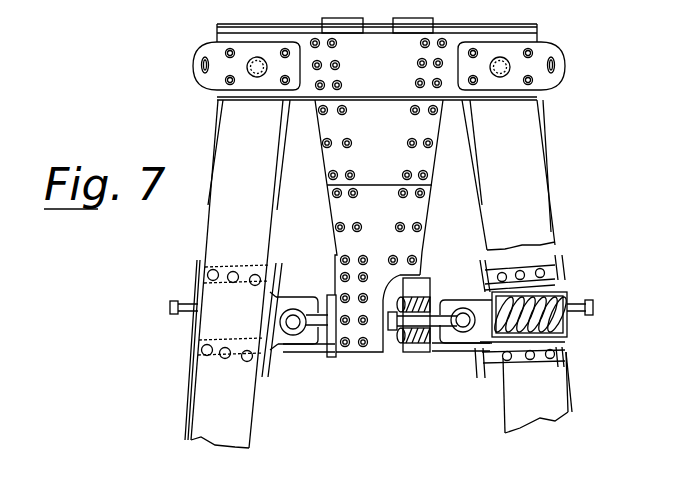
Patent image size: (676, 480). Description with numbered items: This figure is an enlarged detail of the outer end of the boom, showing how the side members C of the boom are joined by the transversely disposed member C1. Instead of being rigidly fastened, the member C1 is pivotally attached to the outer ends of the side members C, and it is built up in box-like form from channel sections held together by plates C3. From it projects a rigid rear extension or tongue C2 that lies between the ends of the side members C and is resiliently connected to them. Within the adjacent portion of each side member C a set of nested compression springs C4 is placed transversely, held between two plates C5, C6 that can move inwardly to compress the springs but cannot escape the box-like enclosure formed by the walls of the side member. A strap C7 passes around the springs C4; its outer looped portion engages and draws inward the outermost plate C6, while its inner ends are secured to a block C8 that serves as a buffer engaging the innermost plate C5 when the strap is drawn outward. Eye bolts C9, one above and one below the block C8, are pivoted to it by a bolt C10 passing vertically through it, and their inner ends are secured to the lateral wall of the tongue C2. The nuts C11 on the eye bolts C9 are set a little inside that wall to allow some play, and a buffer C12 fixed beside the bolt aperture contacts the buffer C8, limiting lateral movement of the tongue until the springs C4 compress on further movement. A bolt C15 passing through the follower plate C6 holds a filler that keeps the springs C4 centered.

The side member of the boom C is at (512, 410).
The transversely disposed member C1 is at (564, 32).
The rear extension (tongue) C2 is at (446, 207).
The plates C3 is at (322, 25).
The nested compression springs C4 is at (556, 302).
The innermost plate C5 is at (490, 345).
The outermost plate C6 is at (569, 320).
The strap C7 is at (585, 373).
The block (buffer) C8 is at (450, 352).
The eye bolts C9 is at (300, 308).
The bolt C10 is at (458, 291).
The nuts C11 is at (390, 331).
The buffer C12 is at (437, 262).
The bolt C15 is at (609, 297).